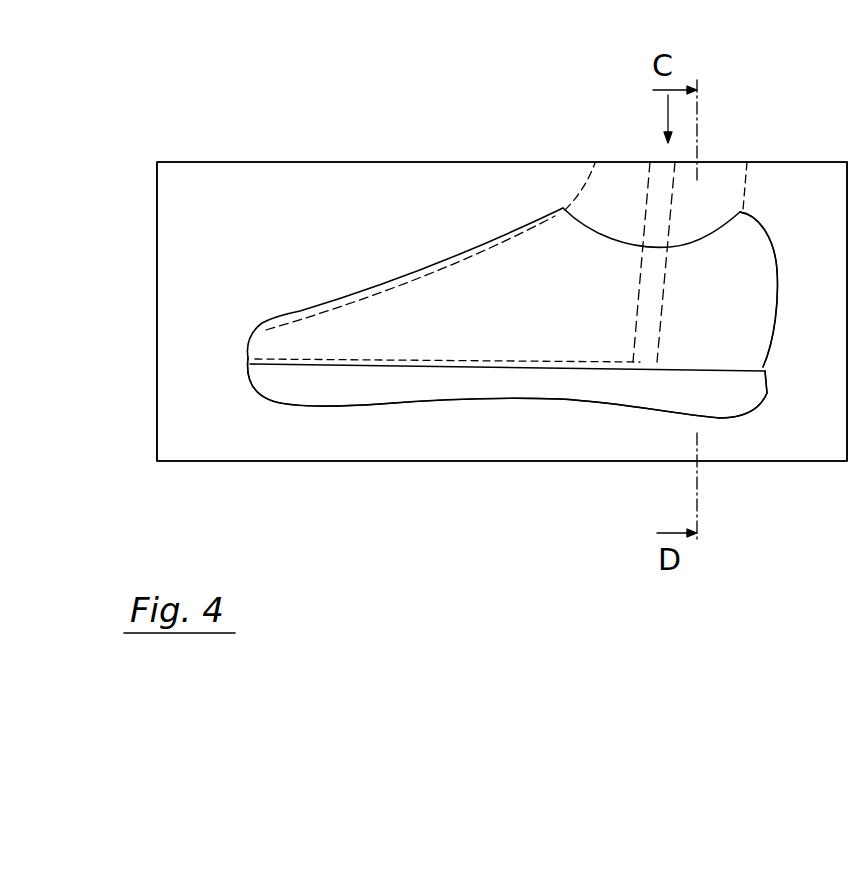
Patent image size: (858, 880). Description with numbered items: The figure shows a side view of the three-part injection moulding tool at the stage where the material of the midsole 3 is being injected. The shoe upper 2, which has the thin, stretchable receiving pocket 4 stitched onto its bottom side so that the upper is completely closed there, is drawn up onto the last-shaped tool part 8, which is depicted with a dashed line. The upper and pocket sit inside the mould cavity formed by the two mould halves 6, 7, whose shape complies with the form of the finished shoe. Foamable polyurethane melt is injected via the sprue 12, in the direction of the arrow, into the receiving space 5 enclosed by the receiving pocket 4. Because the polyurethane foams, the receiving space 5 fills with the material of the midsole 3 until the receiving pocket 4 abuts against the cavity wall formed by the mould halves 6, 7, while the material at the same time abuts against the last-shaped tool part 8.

The shoe upper 2 is at (505, 283).
The midsole 3 is at (590, 380).
The receiving pocket 4 is at (422, 408).
The receiving space 5 is at (507, 379).
The mould half 6 is at (242, 196).
The mould half 7 is at (242, 196).
The tool part in the shape of a shoe last 8 is at (713, 182).
The sprue 12 is at (657, 223).